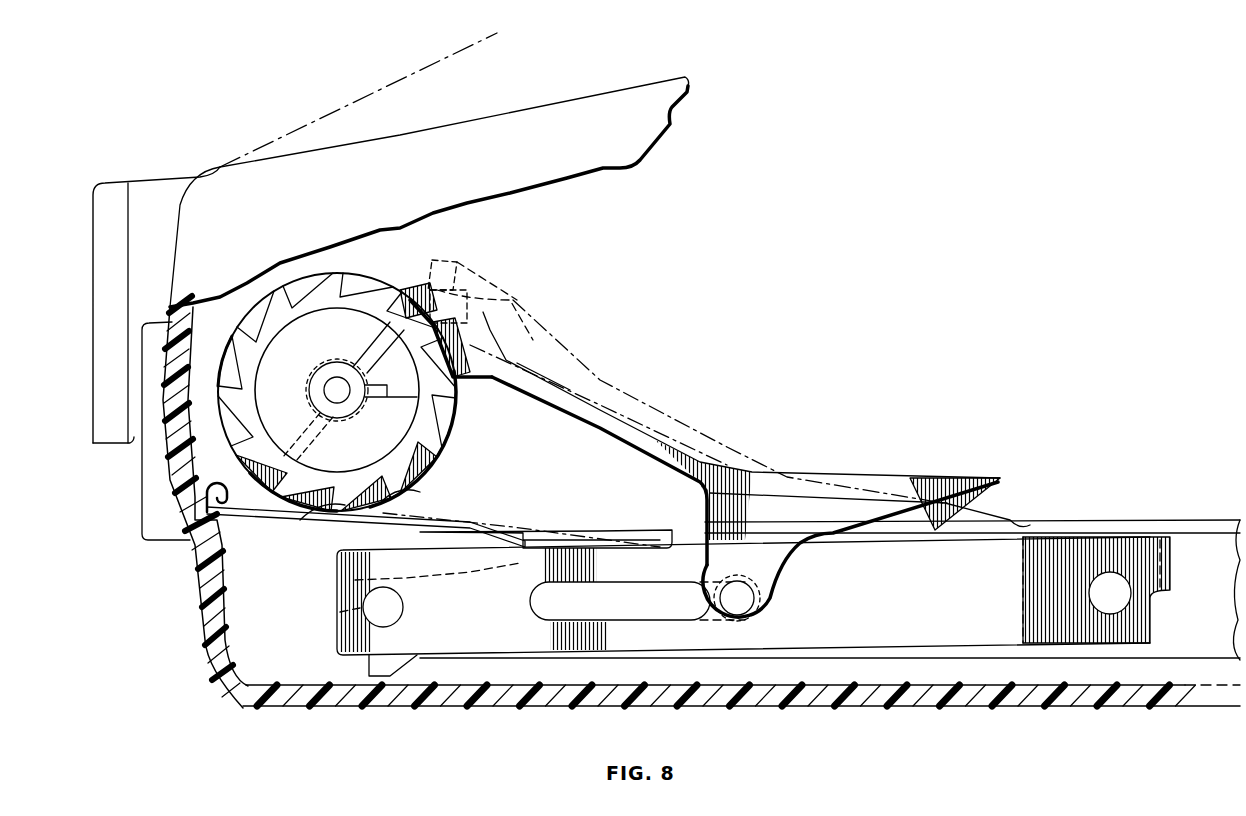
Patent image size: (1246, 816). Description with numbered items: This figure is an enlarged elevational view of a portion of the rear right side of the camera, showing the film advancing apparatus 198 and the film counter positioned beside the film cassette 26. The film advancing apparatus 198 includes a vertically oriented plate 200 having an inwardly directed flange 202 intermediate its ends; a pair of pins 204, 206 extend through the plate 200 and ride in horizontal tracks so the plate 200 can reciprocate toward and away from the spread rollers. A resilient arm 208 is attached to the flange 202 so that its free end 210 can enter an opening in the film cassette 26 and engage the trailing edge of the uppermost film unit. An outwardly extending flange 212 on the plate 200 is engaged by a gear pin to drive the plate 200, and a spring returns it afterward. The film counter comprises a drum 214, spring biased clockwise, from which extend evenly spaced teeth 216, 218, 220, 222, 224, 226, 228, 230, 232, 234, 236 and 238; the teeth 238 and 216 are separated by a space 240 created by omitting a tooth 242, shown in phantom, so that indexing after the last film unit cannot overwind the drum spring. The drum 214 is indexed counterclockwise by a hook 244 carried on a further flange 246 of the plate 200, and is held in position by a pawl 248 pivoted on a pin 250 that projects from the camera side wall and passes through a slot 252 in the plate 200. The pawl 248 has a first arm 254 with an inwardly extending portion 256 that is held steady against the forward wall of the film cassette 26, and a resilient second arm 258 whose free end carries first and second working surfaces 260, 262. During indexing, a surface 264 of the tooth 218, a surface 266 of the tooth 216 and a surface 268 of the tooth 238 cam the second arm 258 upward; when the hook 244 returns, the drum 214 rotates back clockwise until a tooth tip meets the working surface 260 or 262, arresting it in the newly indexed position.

The film cassette 26 is at (862, 668).
The film advancing apparatus 198 is at (585, 677).
The plate 200 is at (500, 641).
The inwardly directed flange 202 is at (700, 520).
The pin 204 is at (403, 603).
The pin 206 is at (1093, 600).
The resilient arm 208 is at (355, 580).
The free end 210 is at (340, 607).
The outwardly extending flange 212 is at (1170, 570).
The drum 214 is at (142, 447).
The tooth 216 is at (445, 445).
The tooth 218 is at (462, 385).
The tooth 220 is at (445, 285).
The tooth 222 is at (395, 285).
The tooth 224 is at (330, 255).
The tooth 226 is at (283, 275).
The tooth 228 is at (238, 330).
The tooth 230 is at (210, 430).
The tooth 232 is at (225, 452).
The tooth 234 is at (240, 475).
The tooth 236 is at (300, 505).
The tooth 238 is at (350, 517).
The space 240 is at (440, 462).
The tooth 242 is at (457, 486).
The hook 244 is at (300, 520).
The flange 246 is at (525, 534).
The pawl 248 is at (700, 440).
The pin 250 is at (760, 606).
The slot 252 is at (632, 592).
The first arm 254 is at (975, 478).
The inwardly extending portion 256 is at (990, 520).
The second arm 258 is at (625, 462).
The first working surface 260 is at (490, 302).
The second working surface 262 is at (365, 312).
The surface 264 is at (470, 348).
The surface 266 is at (455, 418).
The surface 268 is at (400, 488).